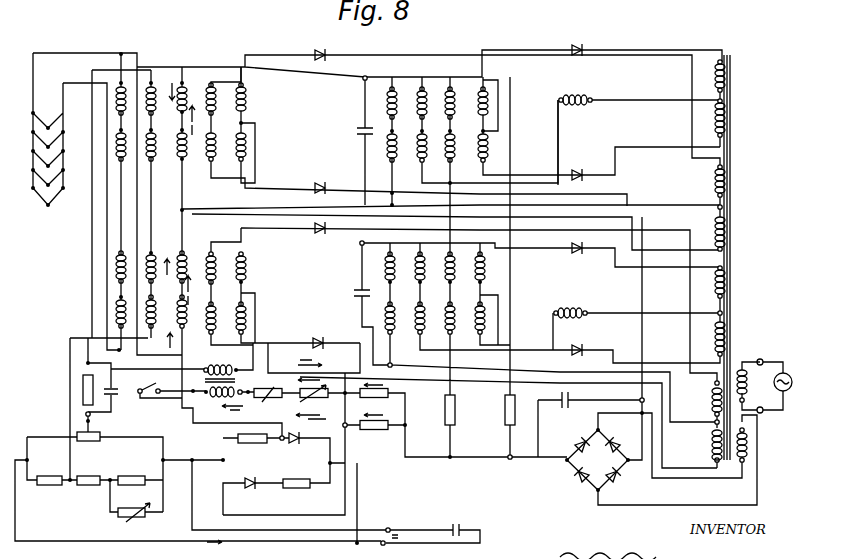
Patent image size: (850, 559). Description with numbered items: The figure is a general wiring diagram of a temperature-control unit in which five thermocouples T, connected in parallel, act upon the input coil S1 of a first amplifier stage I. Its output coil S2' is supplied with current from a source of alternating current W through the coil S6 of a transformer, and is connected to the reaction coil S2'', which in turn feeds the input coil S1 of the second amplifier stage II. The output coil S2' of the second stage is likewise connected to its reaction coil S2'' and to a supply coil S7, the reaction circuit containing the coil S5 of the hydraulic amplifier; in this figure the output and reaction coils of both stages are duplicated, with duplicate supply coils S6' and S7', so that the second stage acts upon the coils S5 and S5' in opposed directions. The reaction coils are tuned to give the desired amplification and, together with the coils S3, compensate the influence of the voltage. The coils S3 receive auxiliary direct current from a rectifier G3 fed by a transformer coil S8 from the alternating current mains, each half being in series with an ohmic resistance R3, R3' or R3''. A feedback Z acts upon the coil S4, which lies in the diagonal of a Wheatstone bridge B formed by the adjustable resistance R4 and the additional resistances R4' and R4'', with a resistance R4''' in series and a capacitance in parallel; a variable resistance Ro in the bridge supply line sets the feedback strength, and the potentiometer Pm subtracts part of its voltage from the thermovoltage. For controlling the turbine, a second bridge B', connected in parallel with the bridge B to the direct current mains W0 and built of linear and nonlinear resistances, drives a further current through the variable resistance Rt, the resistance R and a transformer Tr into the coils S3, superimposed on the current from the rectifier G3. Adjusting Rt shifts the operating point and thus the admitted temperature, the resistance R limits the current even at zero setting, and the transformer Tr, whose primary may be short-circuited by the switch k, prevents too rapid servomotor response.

The thermocouples T is at (33, 158).
The variable resistance Ro is at (155, 0).
The first amplifier stage I is at (172, 53).
The second amplifier stage II is at (408, 76).
The input coil S1 is at (258, 201).
The feedback coil S4 is at (158, 204).
The auxiliary current coil S3 is at (323, 198).
The reaction coil S2'' is at (324, 203).
The output coil S2' is at (371, 198).
The hydraulic amplifier coil S5 is at (576, 140).
The hydraulic amplifier coil S5' is at (580, 303).
The transformer coil S6 is at (708, 208).
The transformer coil S6' is at (704, 424).
The supply coil S7 is at (711, 98).
The supply coil S7' is at (710, 311).
The transformer coil S8 is at (757, 447).
The source of alternating current W is at (748, 380).
The direct current mains W0 is at (410, 544).
The rectifier G3 is at (597, 460).
The ohmic resistance R3 is at (388, 415).
The ohmic resistance R3' is at (463, 410).
The ohmic resistance R3'' is at (498, 417).
The variable resistance Rt is at (323, 401).
The resistance R is at (268, 401).
The transformer Tr is at (206, 381).
The switch k is at (147, 376).
The variable resistance R4 is at (105, 445).
The additional resistance R4' is at (46, 492).
The additional resistance R4'' is at (87, 492).
The series resistance R4''' is at (60, 392).
The potentiometer Pm is at (139, 502).
The feedback Z is at (105, 423).
The Wheatstone bridge B is at (95, 460).
The bridge B' is at (280, 461).